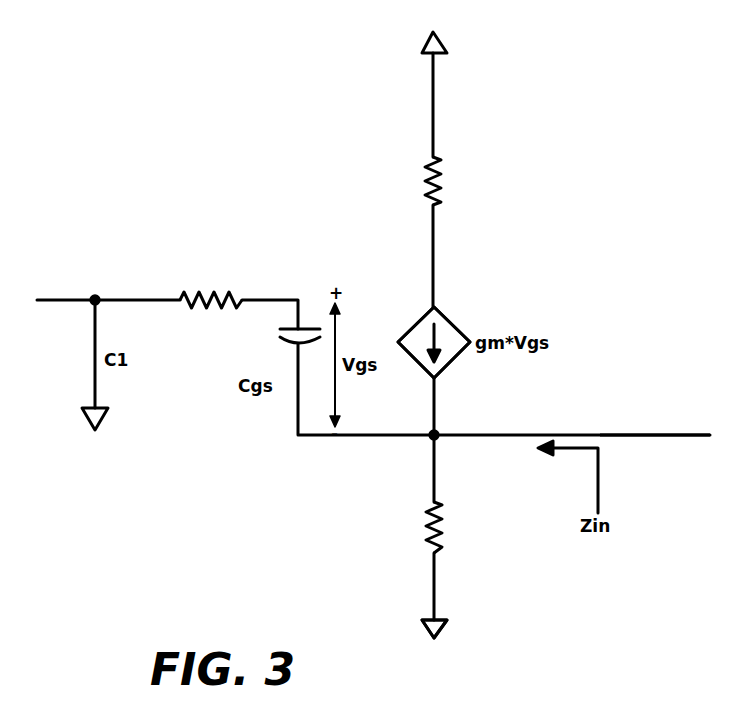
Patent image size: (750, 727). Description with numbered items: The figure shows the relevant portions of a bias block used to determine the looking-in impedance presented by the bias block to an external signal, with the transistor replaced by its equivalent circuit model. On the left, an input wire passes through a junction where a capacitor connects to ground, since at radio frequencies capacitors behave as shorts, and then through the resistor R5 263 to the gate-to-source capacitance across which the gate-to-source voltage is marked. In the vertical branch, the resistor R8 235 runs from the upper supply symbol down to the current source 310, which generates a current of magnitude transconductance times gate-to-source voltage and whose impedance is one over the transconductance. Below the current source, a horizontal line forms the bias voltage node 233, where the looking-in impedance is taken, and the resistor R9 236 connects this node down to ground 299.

The resistor R8 235 is at (443, 172).
The resistor R5 263 is at (216, 288).
The current source 310 is at (450, 320).
The Vbias node 233 is at (655, 433).
The resistor R9 236 is at (452, 528).
The ground 299 is at (441, 628).